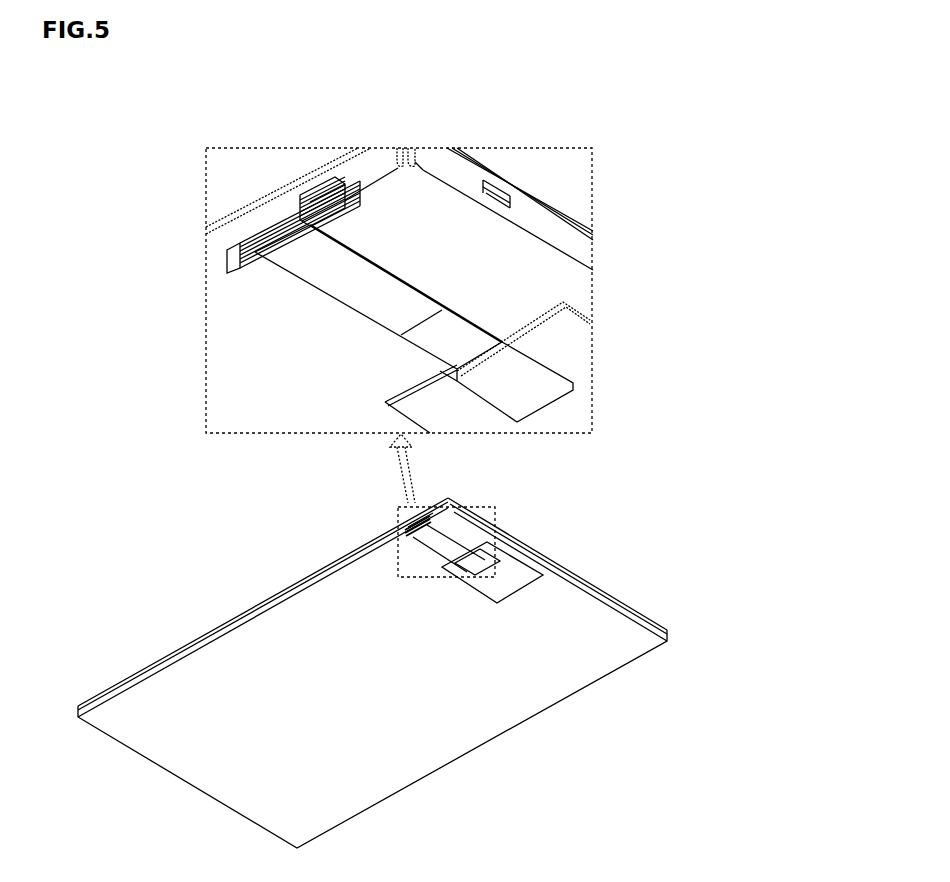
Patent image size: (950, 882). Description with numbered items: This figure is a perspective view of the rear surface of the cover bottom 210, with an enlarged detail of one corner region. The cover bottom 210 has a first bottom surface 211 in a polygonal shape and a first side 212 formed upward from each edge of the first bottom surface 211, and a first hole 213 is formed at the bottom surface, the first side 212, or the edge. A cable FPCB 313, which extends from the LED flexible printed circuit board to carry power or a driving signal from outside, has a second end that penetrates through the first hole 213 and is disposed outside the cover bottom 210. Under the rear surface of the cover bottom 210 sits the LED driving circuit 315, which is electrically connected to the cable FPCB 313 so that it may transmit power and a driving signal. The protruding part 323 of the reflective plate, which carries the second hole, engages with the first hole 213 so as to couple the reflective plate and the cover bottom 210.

The cover bottom 210 is at (115, 234).
The first bottom surface 211 is at (233, 302).
The first side 212 is at (235, 223).
The first hole 213 is at (228, 256).
The cable FPCB 313 is at (378, 284).
The LED driving circuit 315 is at (535, 372).
The protruding part 323 is at (310, 185).